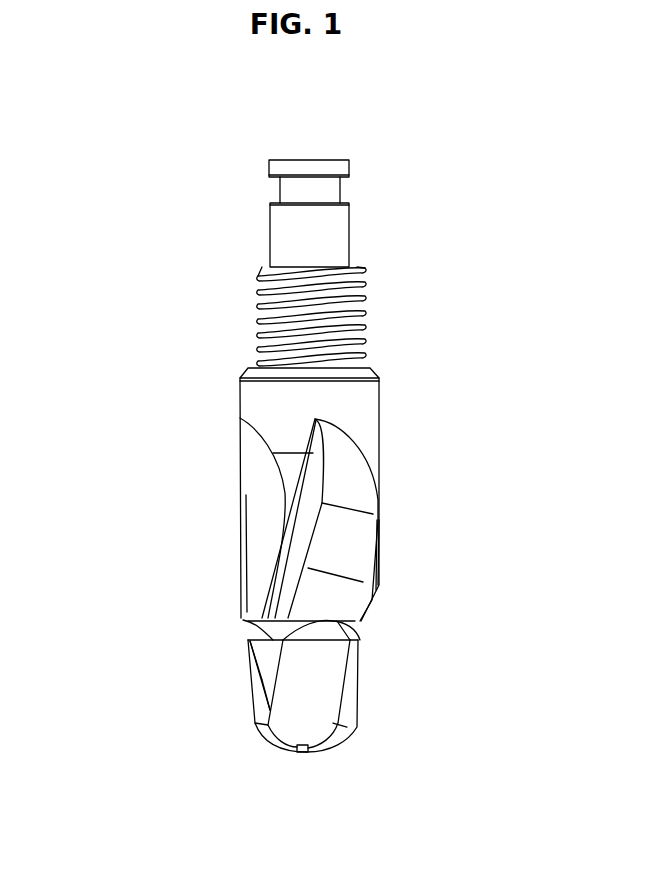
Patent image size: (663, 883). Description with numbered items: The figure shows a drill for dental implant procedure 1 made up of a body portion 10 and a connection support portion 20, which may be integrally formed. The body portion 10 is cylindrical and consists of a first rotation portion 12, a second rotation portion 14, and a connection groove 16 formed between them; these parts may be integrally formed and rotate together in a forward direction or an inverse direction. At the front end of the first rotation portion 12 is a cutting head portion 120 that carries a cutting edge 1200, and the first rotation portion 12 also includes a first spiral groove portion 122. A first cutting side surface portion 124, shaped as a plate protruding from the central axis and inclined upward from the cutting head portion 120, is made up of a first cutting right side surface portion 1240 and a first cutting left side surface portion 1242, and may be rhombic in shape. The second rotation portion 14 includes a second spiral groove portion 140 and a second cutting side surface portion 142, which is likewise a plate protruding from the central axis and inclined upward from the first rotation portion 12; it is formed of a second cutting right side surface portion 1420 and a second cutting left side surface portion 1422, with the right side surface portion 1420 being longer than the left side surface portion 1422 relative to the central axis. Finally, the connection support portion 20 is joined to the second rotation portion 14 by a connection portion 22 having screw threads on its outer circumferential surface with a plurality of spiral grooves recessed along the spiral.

The drill for dental implant procedure 1 is at (322, 848).
The body portion 10 is at (163, 163).
The first rotation portion 12 is at (103, 128).
The second rotation portion 14 is at (103, 243).
The connection groove 16 is at (357, 630).
The connection support portion 20 is at (342, 240).
The connection portion 22 is at (363, 335).
The cutting head portion 120 is at (358, 771).
The first spiral groove portion 122 is at (328, 687).
The first cutting side surface portion 124 is at (145, 650).
The second spiral groove portion 140 is at (260, 492).
The second cutting side surface portion 142 is at (467, 430).
The second cutting right side surface portion 1420 is at (307, 478).
The second cutting left side surface portion 1422 is at (382, 510).
The first cutting right side surface portion 1240 is at (267, 700).
The first cutting left side surface portion 1242 is at (272, 650).
The cutting edge 1200 is at (293, 750).